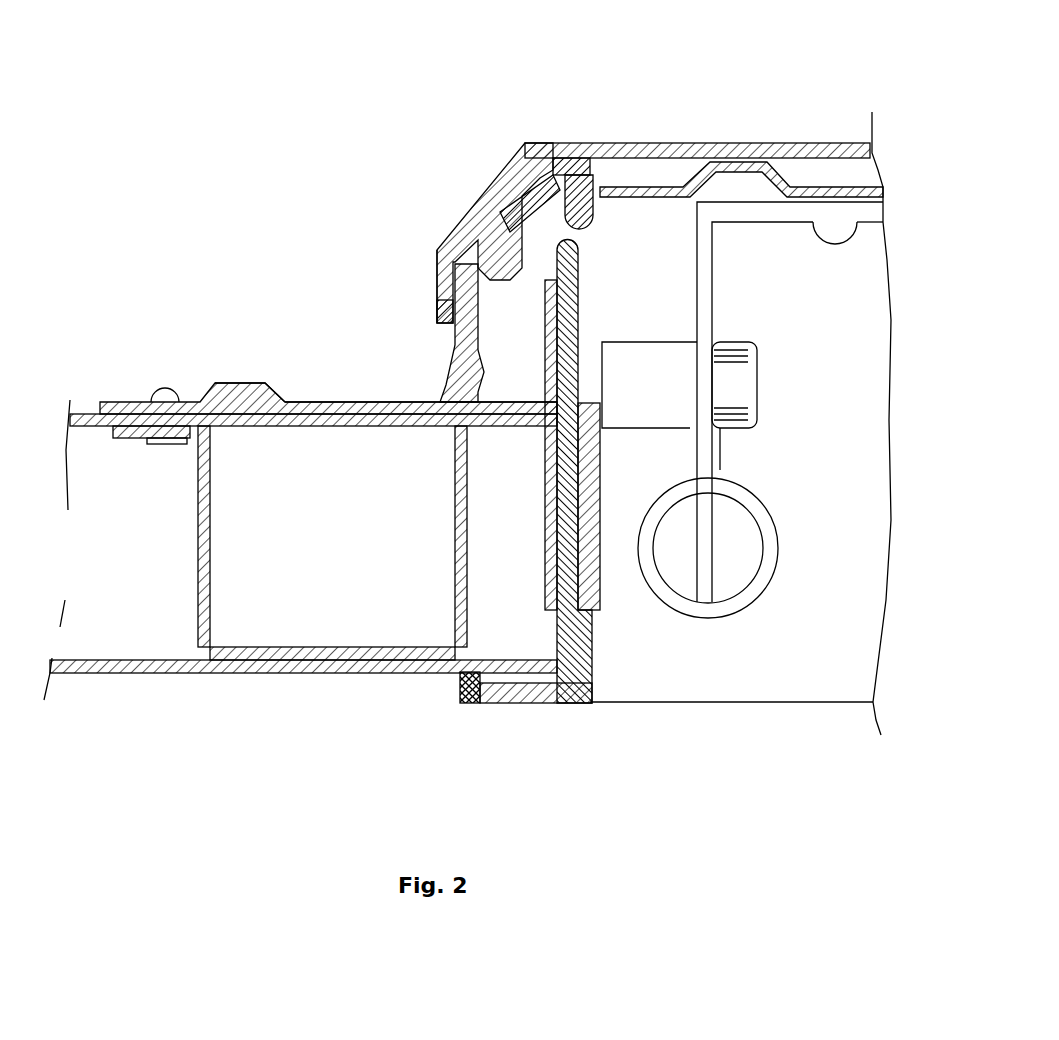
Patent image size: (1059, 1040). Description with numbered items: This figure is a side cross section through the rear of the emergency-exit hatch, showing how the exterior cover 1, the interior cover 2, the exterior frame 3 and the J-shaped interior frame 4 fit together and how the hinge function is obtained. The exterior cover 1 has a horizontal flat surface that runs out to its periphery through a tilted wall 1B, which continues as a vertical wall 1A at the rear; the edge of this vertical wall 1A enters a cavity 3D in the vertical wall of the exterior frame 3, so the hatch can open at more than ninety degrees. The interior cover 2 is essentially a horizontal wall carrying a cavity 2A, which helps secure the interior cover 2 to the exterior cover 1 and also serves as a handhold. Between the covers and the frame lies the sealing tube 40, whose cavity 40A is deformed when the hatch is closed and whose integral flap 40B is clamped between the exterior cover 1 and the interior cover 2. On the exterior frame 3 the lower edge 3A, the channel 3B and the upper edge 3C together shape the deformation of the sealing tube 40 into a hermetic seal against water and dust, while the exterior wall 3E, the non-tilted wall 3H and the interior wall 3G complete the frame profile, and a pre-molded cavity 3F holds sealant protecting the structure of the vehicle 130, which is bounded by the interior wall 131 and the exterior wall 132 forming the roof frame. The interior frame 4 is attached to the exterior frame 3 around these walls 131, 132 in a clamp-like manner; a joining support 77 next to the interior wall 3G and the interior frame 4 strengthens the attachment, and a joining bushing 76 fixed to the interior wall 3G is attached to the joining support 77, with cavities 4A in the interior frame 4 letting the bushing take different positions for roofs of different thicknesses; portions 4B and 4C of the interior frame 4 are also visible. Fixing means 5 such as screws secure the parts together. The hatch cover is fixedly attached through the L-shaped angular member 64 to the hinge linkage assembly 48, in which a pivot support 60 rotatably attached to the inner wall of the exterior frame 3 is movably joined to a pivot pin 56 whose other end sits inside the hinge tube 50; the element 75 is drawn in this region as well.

The exterior cover 1 is at (668, 144).
The vertical wall 1A is at (437, 272).
The tilted wall 1B is at (458, 236).
The interior cover 2 is at (640, 187).
The cavity 2A is at (783, 185).
The exterior frame 3 is at (125, 428).
The lower edge 3A is at (468, 240).
The channel 3B is at (518, 262).
The upper edge 3C is at (531, 145).
The cavity 3D is at (458, 369).
The exterior wall 3E is at (318, 400).
The cavity 3F is at (240, 396).
The interior wall 3G is at (562, 326).
The non-tilted wall 3H is at (437, 306).
The interior frame 4 is at (598, 562).
The cavities 4A is at (580, 446).
The bottom flange of partition wall 4B is at (538, 702).
The corner of partition wall 4C is at (460, 684).
The mechanical fixing means 5 is at (838, 226).
The sealing tube 40 is at (528, 196).
The cavity 40A is at (498, 246).
The integral flap 40B is at (556, 156).
The hinge linkage assembly 48 is at (762, 596).
The hinge tube 50 is at (764, 516).
The pivot pin 56 is at (740, 566).
The pivot support 60 is at (708, 470).
The L-shaped angular member 64 is at (707, 262).
The nut 75 is at (740, 384).
The joining bushing 76 is at (649, 365).
The joining support 77 is at (546, 502).
The vehicle 130 is at (203, 572).
The interior wall 131 is at (344, 668).
The exterior wall 132 is at (228, 392).